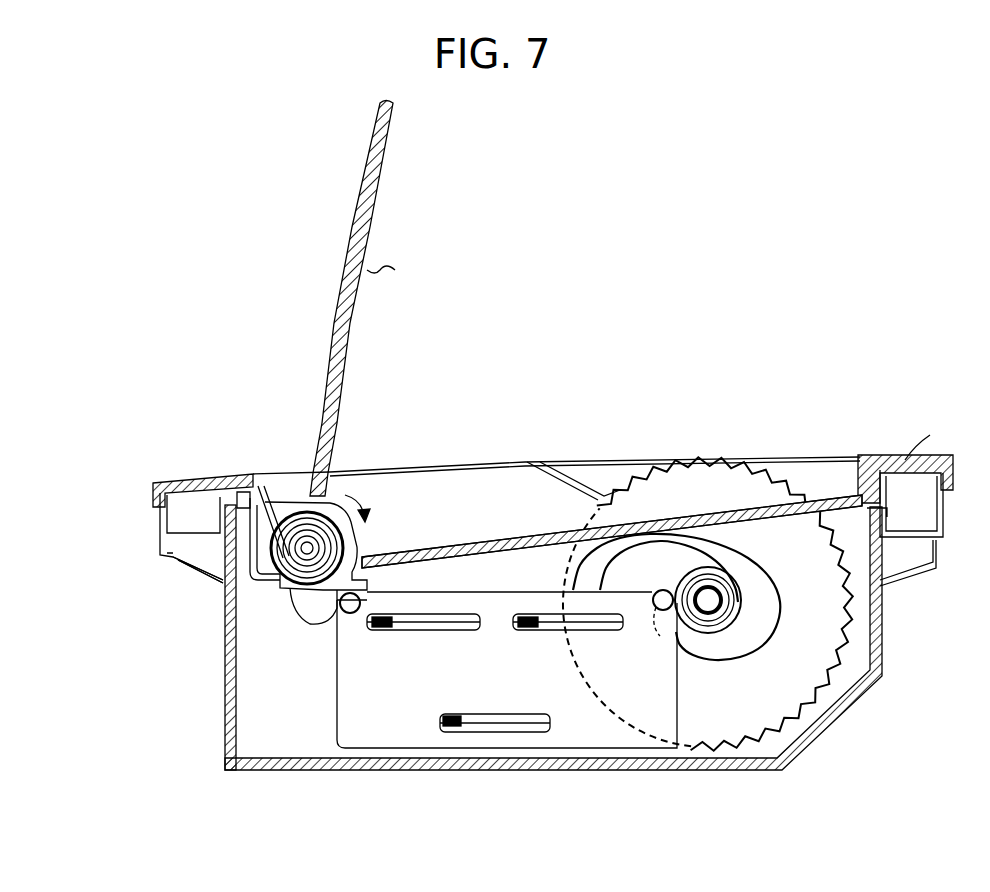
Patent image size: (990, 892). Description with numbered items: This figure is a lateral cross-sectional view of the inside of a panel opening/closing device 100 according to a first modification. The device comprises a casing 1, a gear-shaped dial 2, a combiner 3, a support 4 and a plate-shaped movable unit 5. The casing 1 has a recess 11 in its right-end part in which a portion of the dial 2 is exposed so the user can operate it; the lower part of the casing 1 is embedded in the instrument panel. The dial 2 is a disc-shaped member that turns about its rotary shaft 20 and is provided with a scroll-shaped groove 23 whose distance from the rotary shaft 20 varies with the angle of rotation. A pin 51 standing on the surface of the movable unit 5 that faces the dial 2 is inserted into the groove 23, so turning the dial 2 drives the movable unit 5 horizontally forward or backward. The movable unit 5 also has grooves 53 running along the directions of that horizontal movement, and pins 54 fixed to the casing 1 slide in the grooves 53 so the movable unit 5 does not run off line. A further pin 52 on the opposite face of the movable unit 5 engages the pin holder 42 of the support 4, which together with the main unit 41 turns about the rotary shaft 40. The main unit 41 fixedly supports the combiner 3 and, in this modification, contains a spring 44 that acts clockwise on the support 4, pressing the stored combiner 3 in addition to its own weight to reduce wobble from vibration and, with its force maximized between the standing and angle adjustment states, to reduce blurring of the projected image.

The casing 1 is at (880, 645).
The dial 2 is at (800, 720).
The combiner 3 is at (359, 232).
The support 4 is at (133, 600).
The movable unit 5 is at (370, 752).
The recess 11 is at (820, 477).
The rotary shaft 20 is at (708, 604).
The scroll-shaped groove 23 is at (780, 610).
The rotary shaft 40 is at (302, 545).
The main unit 41 is at (262, 572).
The pin holder 42 is at (290, 594).
The spring 44 is at (252, 550).
The pin 51 is at (657, 612).
The pin 52 is at (345, 612).
The grooves 53 is at (506, 734).
The pins 54 is at (451, 730).
The panel opening/closing device 100 is at (728, 334).